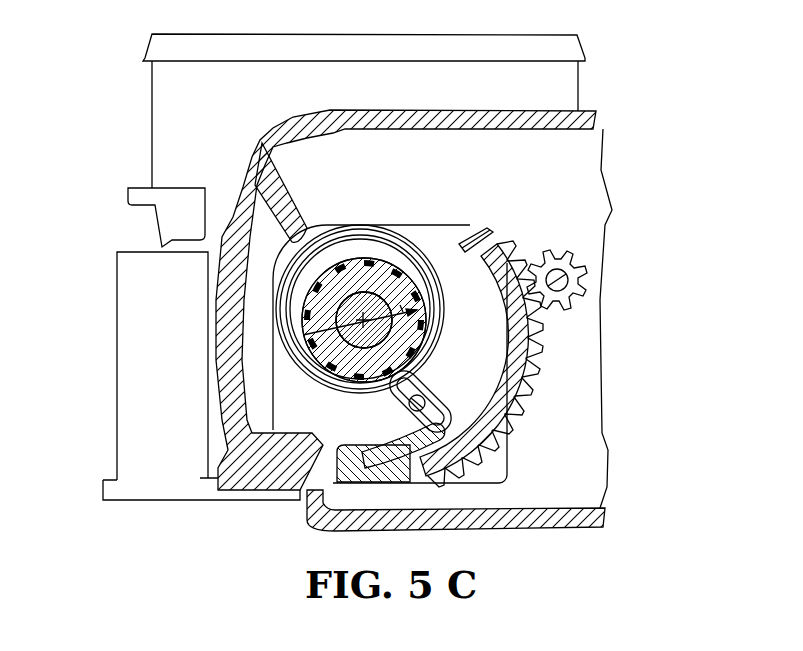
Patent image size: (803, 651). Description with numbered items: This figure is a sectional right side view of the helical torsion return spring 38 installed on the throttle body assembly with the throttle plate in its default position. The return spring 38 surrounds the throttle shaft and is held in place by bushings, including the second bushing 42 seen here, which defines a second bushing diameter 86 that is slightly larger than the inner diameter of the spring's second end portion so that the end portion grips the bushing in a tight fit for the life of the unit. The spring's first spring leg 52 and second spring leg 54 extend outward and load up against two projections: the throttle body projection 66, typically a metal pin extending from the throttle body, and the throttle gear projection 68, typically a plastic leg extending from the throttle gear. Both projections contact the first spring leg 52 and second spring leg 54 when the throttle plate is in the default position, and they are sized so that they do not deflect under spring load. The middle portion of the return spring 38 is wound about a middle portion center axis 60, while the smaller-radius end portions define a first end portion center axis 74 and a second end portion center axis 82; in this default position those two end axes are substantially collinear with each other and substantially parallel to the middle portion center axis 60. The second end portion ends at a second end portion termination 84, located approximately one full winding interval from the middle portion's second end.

The return spring 38 is at (290, 262).
The second bushing 42 is at (363, 320).
The first spring leg 52 is at (530, 330).
The second spring leg 54 is at (323, 480).
The middle portion center axis 60 is at (363, 320).
The throttle body projection 66 is at (320, 440).
The throttle gear projection 68 is at (445, 432).
The first end portion center axis 74 is at (363, 320).
The second end portion center axis 82 is at (363, 320).
The second end portion termination 84 is at (420, 383).
The second bushing diameter 86 is at (400, 305).